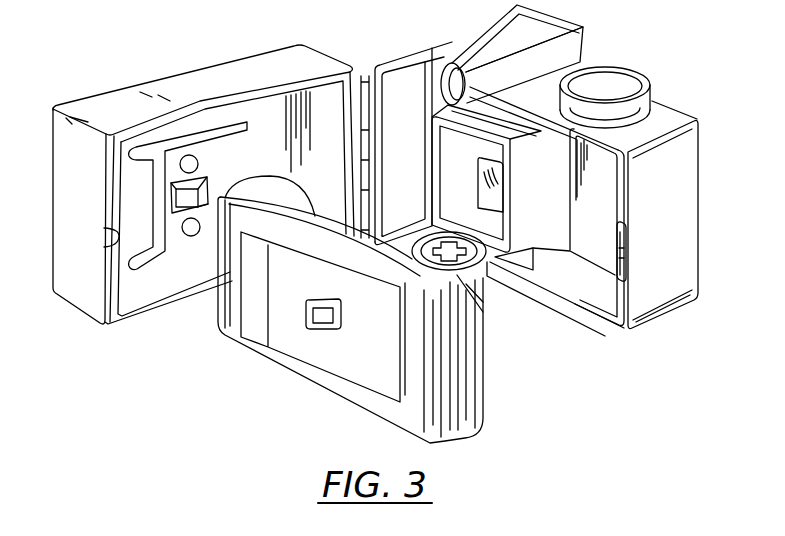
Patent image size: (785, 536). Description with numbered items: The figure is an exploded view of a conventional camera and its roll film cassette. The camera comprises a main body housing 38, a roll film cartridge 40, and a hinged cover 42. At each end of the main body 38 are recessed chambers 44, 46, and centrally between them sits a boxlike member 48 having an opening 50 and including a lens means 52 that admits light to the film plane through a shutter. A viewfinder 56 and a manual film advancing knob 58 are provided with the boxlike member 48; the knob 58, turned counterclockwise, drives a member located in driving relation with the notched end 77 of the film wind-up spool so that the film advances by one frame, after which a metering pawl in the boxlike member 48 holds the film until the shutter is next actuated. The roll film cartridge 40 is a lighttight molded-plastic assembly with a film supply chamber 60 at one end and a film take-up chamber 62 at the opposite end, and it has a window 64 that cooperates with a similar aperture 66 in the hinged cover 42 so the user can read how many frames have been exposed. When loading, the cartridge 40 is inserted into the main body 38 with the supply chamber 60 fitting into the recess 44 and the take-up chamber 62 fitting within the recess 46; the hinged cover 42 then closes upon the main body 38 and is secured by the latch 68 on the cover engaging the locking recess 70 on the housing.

The main body housing 38 is at (667, 318).
The roll film cartridge 40 is at (379, 320).
The hinged cover 42 is at (82, 298).
The recessed chamber 44 is at (410, 108).
The recessed chamber 46 is at (597, 211).
The boxlike member 48 is at (541, 257).
The opening 50 is at (466, 208).
The lens means 52 is at (500, 196).
The viewfinder 56 is at (508, 21).
The manual film advancing knob 58 is at (627, 90).
The film supply chamber 60 is at (280, 188).
The film take-up chamber 62 is at (487, 411).
The window 64 is at (323, 305).
The aperture 66 is at (212, 185).
The latch 68 is at (108, 238).
The locking recess 70 is at (627, 262).
The notched end 77 is at (485, 314).